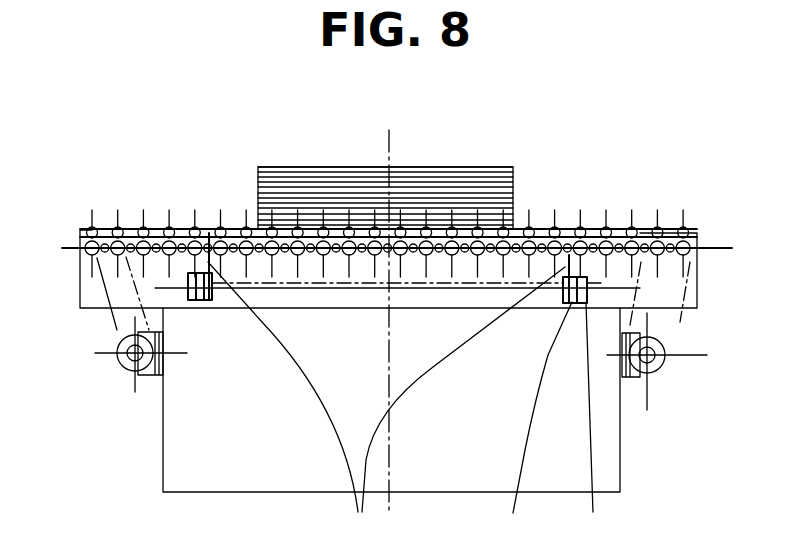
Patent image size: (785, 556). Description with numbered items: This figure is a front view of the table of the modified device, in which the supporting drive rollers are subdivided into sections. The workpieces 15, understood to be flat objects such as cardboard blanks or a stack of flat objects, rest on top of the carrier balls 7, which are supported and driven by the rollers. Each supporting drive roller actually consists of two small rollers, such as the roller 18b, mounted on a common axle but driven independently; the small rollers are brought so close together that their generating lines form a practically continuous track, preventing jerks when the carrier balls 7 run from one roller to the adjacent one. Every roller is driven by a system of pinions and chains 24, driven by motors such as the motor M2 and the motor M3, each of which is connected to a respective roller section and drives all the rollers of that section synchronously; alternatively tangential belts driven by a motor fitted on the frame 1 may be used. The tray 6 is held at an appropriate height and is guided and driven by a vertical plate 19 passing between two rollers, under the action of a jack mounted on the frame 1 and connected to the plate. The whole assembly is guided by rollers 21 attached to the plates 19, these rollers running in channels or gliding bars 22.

The frame 1 is at (623, 480).
The tray 6 is at (617, 228).
The carrier balls 7 is at (686, 230).
The workpieces 15 is at (483, 192).
The small roller 18b is at (100, 249).
The vertical plate 19 is at (386, 405).
The rollers 21 is at (531, 425).
The channels or gliding bars 22 is at (597, 426).
The system of pinions and chains 24 is at (110, 318).
The motor M2 is at (667, 375).
The motor M3 is at (119, 372).